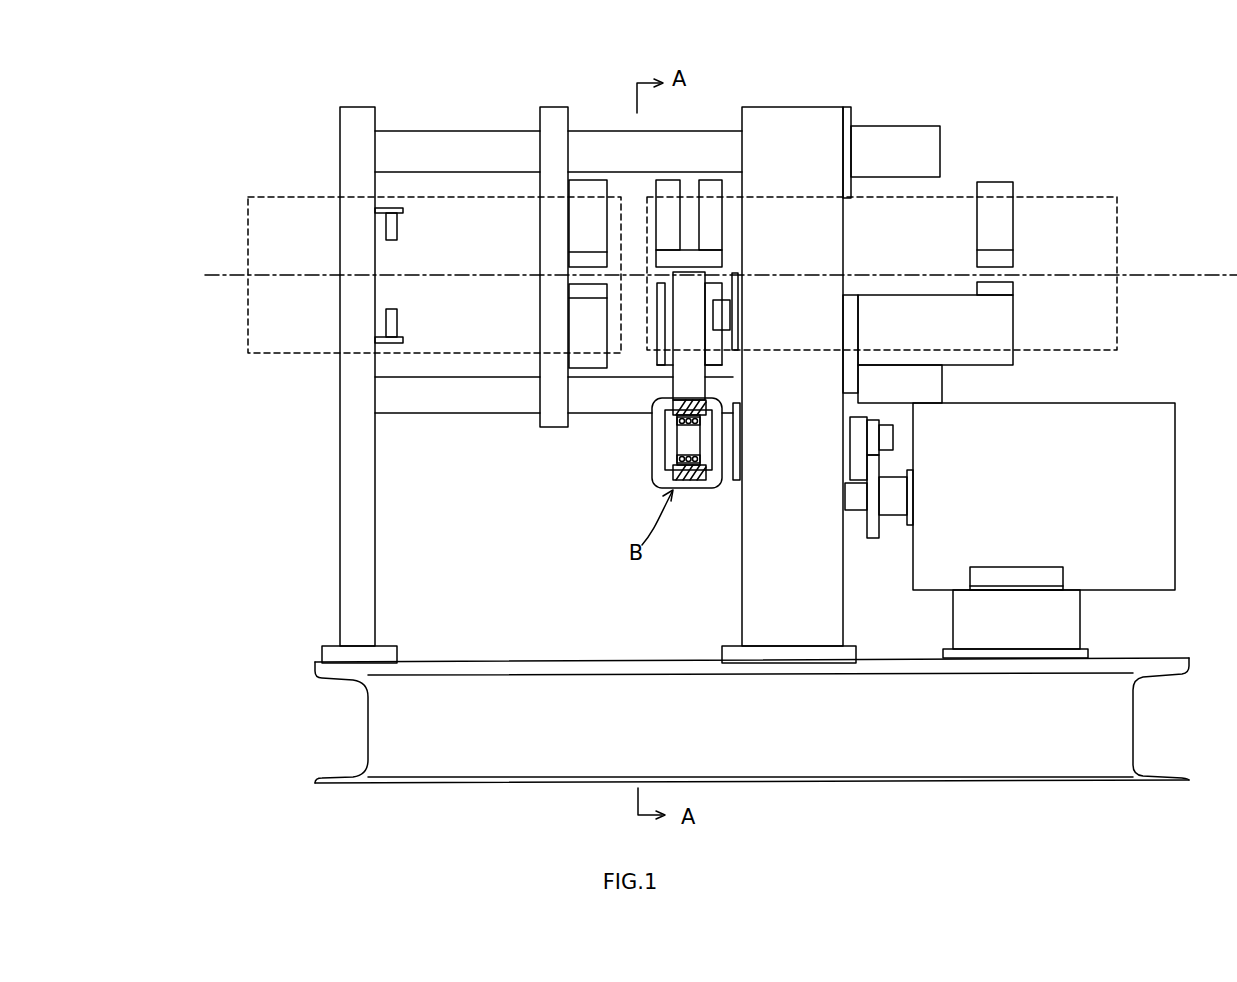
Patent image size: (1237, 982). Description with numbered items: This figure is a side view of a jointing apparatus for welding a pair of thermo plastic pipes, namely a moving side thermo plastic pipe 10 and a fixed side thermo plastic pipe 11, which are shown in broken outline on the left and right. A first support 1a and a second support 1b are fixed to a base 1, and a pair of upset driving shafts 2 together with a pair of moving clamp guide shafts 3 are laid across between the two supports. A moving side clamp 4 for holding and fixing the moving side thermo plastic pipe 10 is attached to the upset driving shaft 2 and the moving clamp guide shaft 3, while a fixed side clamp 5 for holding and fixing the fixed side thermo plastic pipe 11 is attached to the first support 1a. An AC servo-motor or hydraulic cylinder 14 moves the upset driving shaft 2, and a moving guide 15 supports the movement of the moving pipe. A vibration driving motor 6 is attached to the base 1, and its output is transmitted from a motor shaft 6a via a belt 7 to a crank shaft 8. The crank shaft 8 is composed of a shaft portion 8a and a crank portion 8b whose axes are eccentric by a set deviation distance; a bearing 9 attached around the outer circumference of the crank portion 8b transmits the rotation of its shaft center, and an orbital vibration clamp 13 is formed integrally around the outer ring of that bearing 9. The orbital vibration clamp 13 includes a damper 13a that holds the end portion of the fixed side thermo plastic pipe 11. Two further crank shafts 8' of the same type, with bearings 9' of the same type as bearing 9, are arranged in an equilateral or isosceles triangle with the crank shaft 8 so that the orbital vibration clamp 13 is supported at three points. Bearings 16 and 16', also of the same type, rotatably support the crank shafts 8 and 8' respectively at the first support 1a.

The base 1 is at (838, 770).
The first support 1a is at (790, 107).
The second support 1b is at (368, 107).
The upset driving shaft 2 is at (466, 131).
The moving clamp guide shaft 3 is at (465, 415).
The moving side clamp 4 is at (588, 180).
The fixed side clamp 5 is at (998, 182).
The vibration driving motor 6 is at (1150, 403).
The motor shaft 6a is at (898, 515).
The belt 7 is at (870, 540).
The crank shaft 8 is at (965, 411).
The crank shaft 8' is at (751, 305).
The shaft portion 8a is at (720, 488).
The crank portion 8b is at (665, 442).
The bearing 9 is at (656, 473).
The bearing 9' is at (655, 364).
The moving side thermo plastic pipe 10 is at (248, 225).
The fixed side thermo plastic pipe 11 is at (1117, 227).
The orbital vibration clamp 13 is at (693, 293).
The damper 13a is at (676, 180).
The AC servo-motor or hydraulic cylinder 14 is at (905, 126).
The moving guide 15 is at (397, 309).
The bearing 16 is at (768, 441).
The bearing 16' is at (769, 311).